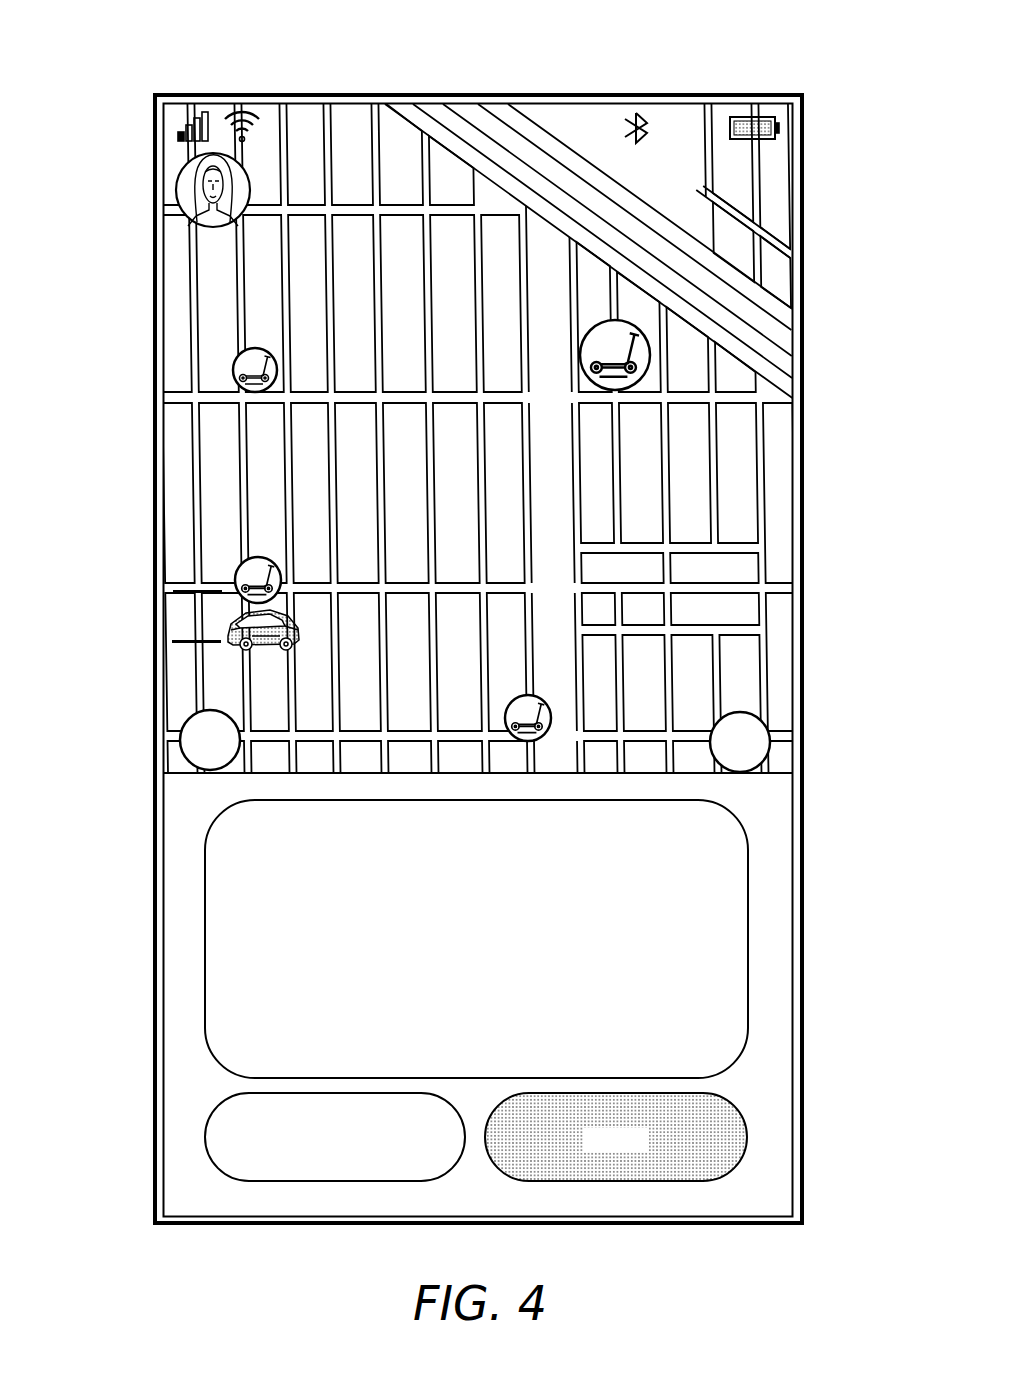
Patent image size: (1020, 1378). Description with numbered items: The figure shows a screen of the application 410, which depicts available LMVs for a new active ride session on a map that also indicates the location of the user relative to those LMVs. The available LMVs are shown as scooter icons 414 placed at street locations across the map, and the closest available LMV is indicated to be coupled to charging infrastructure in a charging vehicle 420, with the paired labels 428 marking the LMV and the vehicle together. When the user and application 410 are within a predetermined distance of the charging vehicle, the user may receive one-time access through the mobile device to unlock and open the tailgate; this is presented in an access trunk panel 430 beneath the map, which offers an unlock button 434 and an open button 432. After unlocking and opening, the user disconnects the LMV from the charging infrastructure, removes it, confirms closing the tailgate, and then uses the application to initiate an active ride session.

The application 410 is at (120, 115).
The scooter location indicators 414 is at (226, 367).
The vehicle 420 is at (263, 630).
The indicator labels 428 is at (162, 578).
The access trunk panel 430 is at (750, 884).
The open button 432 is at (750, 1136).
The unlock button 434 is at (203, 1136).